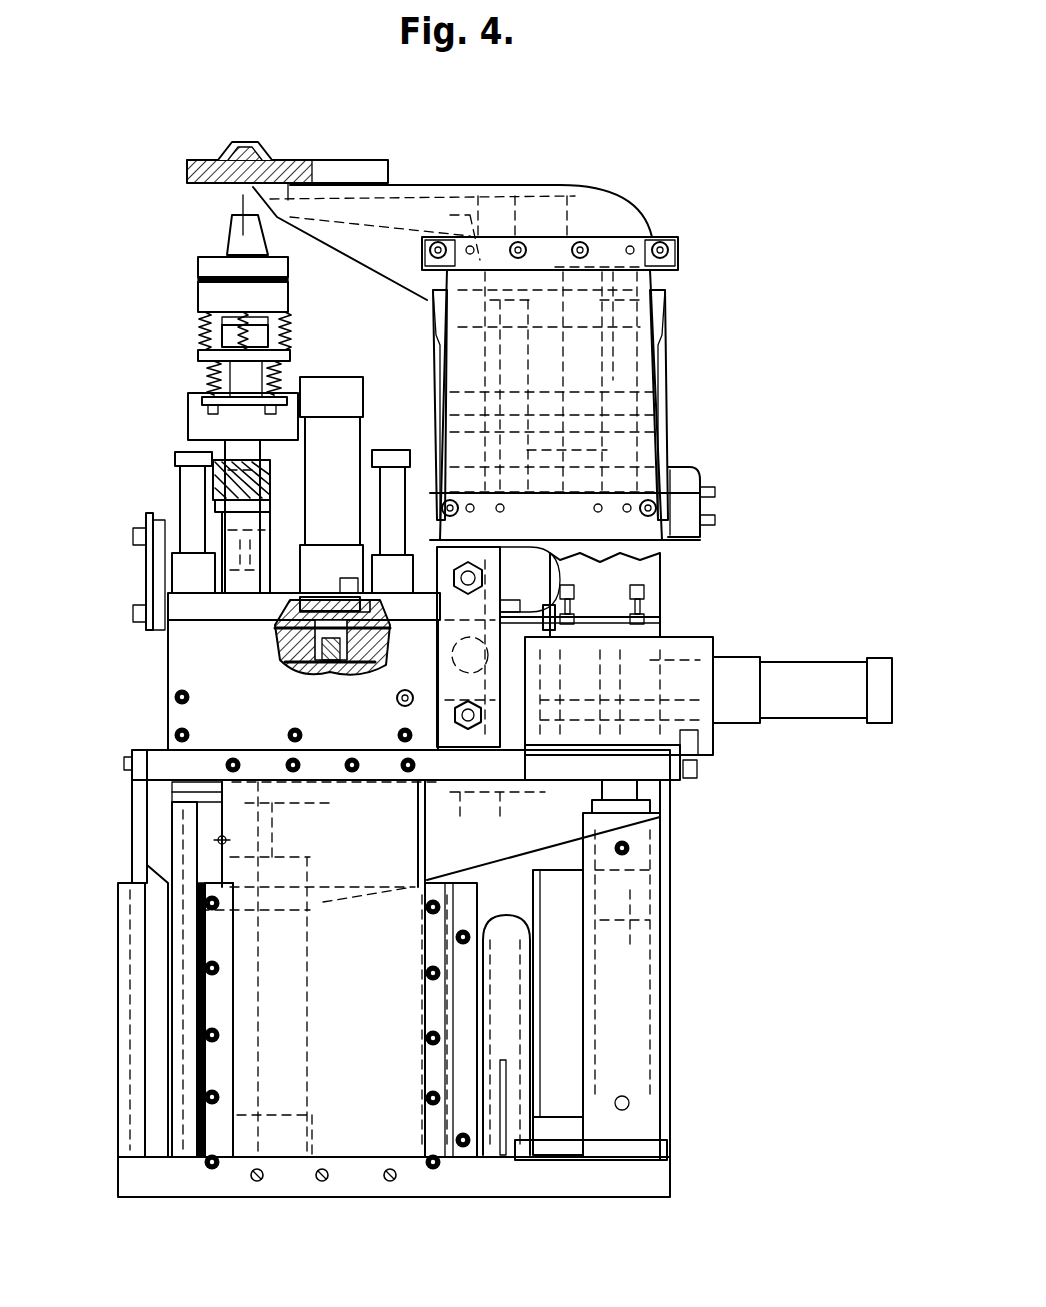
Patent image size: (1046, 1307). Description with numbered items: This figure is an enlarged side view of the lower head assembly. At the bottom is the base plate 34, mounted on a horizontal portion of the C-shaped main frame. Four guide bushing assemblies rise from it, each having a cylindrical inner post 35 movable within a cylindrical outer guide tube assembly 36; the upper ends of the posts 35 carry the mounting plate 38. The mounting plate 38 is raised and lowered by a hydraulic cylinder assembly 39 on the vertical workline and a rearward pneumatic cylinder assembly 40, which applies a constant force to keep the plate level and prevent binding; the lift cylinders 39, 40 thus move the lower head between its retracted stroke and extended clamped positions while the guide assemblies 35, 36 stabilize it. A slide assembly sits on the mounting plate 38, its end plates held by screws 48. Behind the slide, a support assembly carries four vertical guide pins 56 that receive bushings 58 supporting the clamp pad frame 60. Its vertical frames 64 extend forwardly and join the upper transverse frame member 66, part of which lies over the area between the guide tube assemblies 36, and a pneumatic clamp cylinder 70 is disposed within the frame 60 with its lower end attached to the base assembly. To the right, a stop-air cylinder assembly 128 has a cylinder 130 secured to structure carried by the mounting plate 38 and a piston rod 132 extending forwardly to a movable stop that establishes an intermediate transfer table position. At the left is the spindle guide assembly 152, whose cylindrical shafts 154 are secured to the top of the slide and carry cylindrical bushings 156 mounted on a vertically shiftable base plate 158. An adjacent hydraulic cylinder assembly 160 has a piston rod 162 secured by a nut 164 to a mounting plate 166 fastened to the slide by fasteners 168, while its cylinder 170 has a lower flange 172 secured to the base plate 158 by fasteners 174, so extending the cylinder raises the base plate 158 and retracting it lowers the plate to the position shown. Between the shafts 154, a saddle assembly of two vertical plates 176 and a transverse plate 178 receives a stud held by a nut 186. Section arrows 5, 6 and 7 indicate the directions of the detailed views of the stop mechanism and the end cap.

The base plate 34 is at (670, 1180).
The cylindrical inner post 35 is at (665, 806).
The cylindrical outer guide tube assembly 36 is at (665, 860).
The mounting plate 38 is at (660, 790).
The hydraulic cylinder assembly 39 is at (307, 1000).
The pneumatic cylinder assembly 40 is at (575, 990).
The screws 48 is at (290, 735).
The guide pins 56 is at (433, 360).
The bushings 58 is at (433, 345).
The clamp pad frame 60 is at (635, 170).
The vertical frames 64 is at (490, 186).
The upper transverse frame member 66 is at (375, 160).
The pneumatic clamp cylinder 70 is at (560, 345).
The stop-air cylinder assembly 128 is at (780, 637).
The cylinder 130 is at (745, 722).
The piston rod 132 is at (700, 620).
The guide assembly 152 is at (155, 415).
The cylindrical shaft 154 is at (180, 478).
The cylindrical bushing 156 is at (178, 580).
The vertically shiftable base plate 158 is at (180, 598).
The hydraulic cylinder assembly 160 is at (308, 372).
The piston rod 162 is at (300, 612).
The nut 164 is at (310, 672).
The mounting plate 166 is at (280, 650).
The fasteners 168 is at (430, 560).
The cylinder 170 is at (345, 483).
The lower flange 172 is at (340, 545).
The fasteners 174 is at (355, 582).
The vertical plates 176 is at (222, 625).
The transverse plate 178 is at (185, 528).
The nut 186 is at (178, 558).
The section line 5 is at (473, 543).
The section line 6 is at (387, 665).
The section line 7 is at (232, 197).